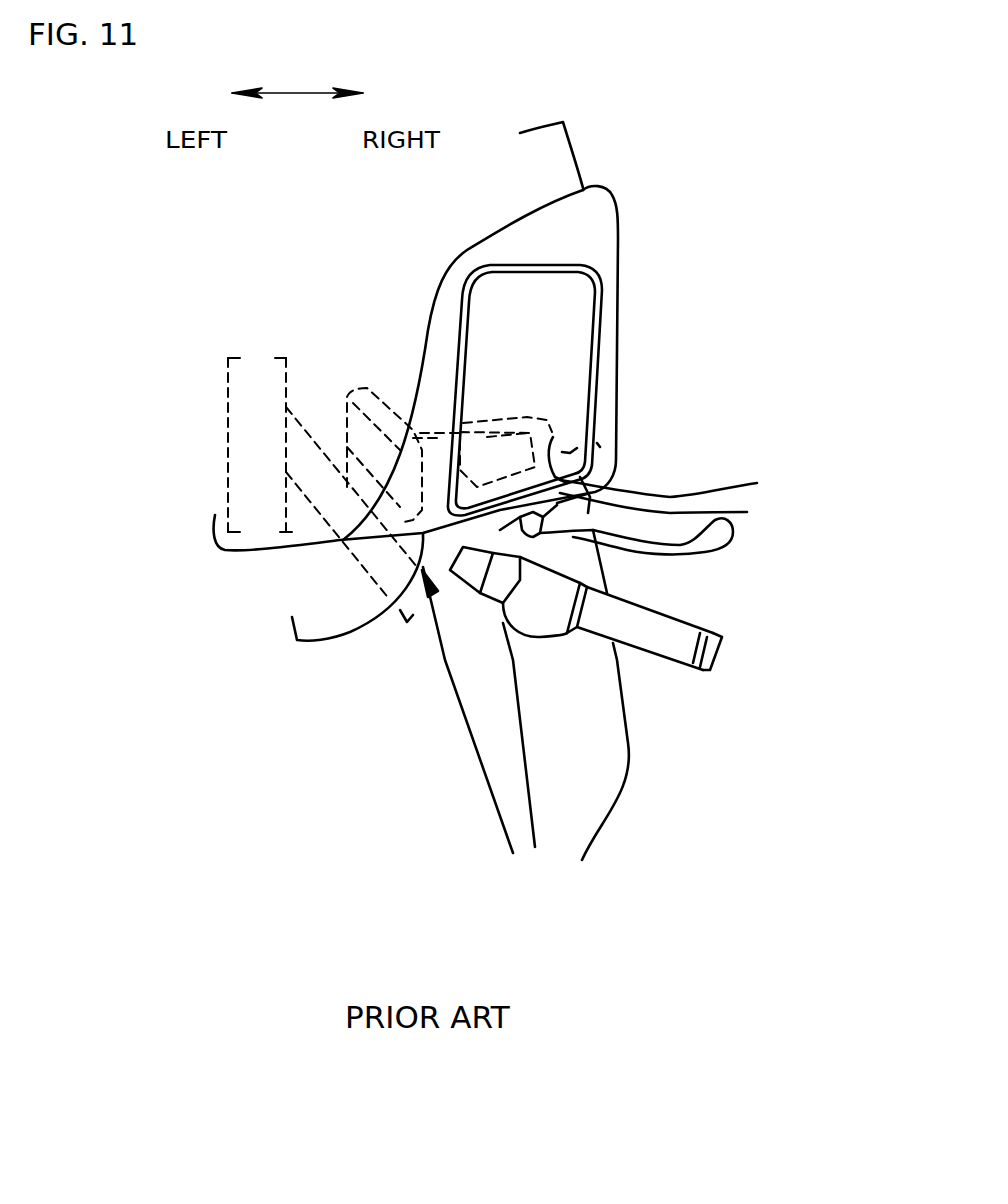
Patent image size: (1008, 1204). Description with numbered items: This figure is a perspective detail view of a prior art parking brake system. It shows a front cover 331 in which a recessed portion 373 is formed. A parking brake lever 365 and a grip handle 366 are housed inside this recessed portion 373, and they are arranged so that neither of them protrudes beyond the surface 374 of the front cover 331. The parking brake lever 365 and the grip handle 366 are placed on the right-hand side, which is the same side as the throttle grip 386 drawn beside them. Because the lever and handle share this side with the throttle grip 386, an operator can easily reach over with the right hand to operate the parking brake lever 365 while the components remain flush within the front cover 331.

The front cover 331 is at (632, 299).
The parking brake lever 365 is at (480, 420).
The grip handle 366 is at (433, 435).
The surface 374 is at (757, 483).
The recessed portion 373 is at (752, 515).
The throttle grip 386 is at (688, 677).